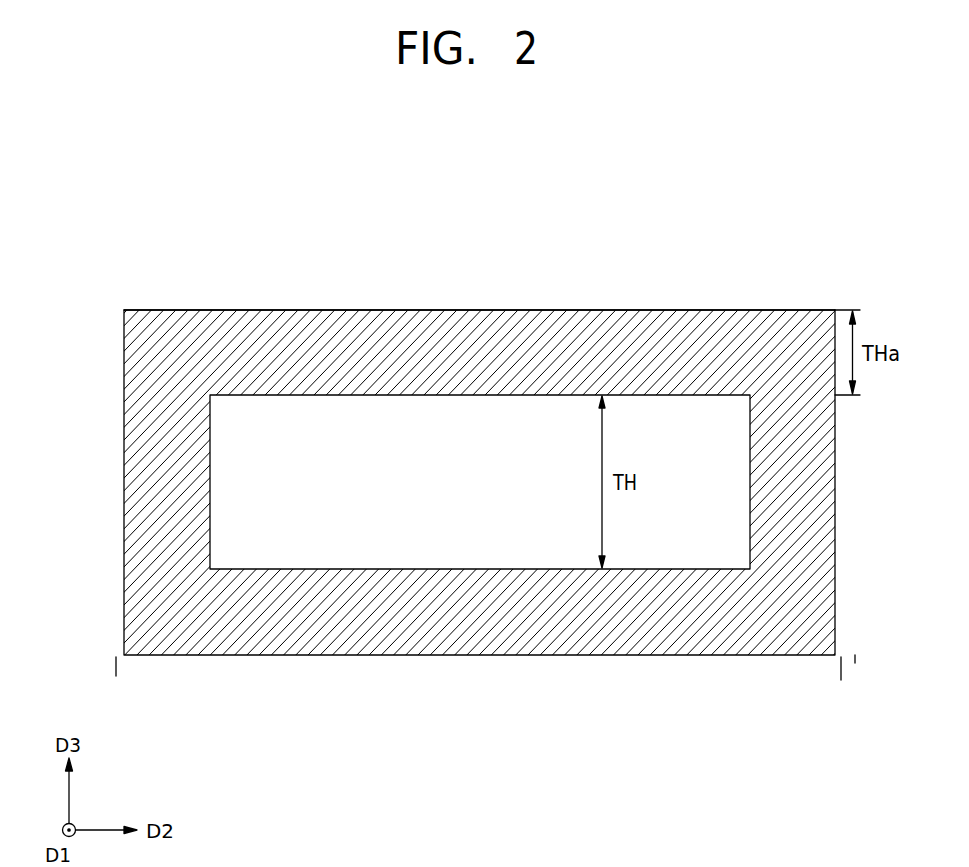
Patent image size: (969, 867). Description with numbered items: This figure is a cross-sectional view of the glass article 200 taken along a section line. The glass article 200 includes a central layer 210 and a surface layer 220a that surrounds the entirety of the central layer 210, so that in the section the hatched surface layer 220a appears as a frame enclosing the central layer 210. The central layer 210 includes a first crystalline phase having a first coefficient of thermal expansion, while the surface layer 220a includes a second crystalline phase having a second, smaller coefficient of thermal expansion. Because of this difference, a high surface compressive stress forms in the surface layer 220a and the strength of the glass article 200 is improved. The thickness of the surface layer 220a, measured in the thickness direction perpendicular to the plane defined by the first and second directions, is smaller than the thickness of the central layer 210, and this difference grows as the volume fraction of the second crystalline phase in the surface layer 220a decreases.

The glass article 200 is at (113, 279).
The central layer 210 is at (263, 421).
The surface layer 220a is at (350, 323).